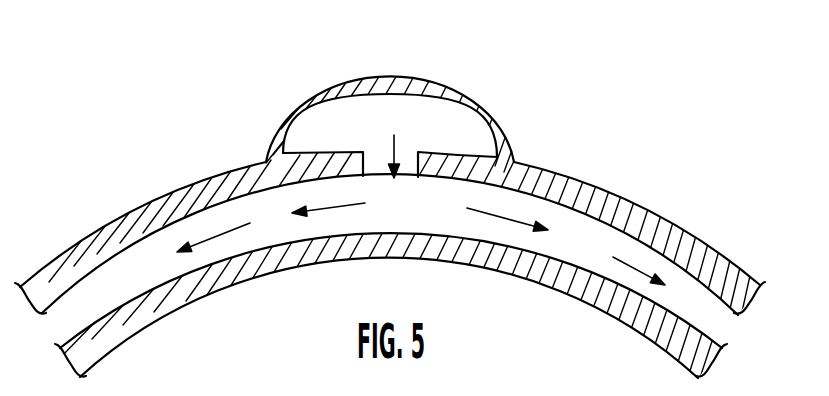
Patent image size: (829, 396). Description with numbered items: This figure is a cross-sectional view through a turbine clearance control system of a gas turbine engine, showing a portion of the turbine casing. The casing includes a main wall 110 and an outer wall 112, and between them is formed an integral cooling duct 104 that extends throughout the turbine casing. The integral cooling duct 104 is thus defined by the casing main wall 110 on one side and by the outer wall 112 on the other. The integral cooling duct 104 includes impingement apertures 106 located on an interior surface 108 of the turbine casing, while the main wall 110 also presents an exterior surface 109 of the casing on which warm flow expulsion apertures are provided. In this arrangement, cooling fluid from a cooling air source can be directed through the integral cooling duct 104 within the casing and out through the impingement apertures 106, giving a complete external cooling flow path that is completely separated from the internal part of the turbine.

The integral cooling duct 104 is at (363, 138).
The impingement apertures 106 is at (447, 138).
The interior surface 108 is at (463, 152).
The exterior surface 109 is at (123, 218).
The main wall 110 is at (598, 208).
The outer wall 112 is at (423, 80).